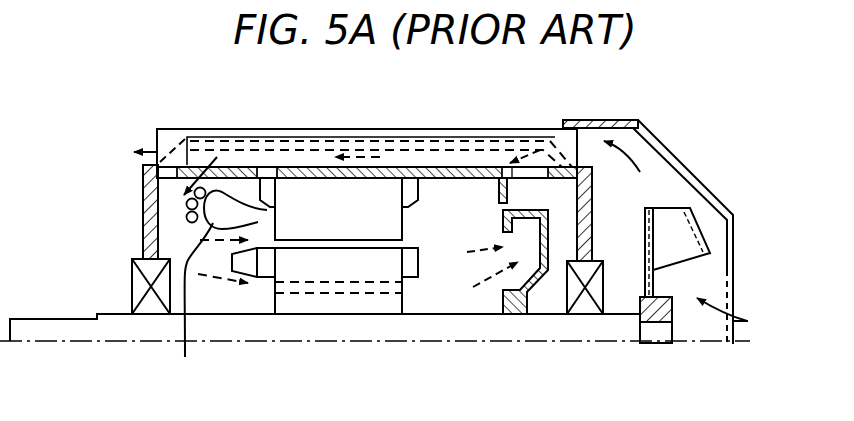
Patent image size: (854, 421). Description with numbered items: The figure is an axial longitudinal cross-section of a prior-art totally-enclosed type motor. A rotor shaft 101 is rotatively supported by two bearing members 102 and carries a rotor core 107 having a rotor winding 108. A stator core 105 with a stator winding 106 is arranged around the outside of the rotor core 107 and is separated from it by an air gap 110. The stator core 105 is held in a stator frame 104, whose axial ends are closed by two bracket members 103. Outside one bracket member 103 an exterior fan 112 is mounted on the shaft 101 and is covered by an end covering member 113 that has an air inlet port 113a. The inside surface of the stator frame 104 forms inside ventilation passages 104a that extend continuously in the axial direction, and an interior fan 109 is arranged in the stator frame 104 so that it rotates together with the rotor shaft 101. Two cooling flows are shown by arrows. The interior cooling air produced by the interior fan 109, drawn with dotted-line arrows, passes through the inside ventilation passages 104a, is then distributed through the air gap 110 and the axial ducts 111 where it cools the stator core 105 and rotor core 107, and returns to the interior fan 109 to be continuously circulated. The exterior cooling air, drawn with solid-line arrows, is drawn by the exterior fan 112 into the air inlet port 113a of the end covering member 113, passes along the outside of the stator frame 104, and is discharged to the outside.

The rotor shaft 101 is at (40, 318).
The bearing member 102 is at (152, 300).
The bracket member 103 is at (143, 211).
The stator frame 104 is at (166, 165).
The inside ventilation passage 104a is at (397, 155).
The stator core 105 is at (303, 178).
The stator winding 106 is at (217, 288).
The rotor core 107 is at (320, 302).
The rotor winding 108 is at (258, 276).
The interior fan 109 is at (525, 227).
The air gap 110 is at (340, 242).
The axial duct 111 is at (382, 287).
The exterior fan 112 is at (668, 208).
The end covering member 113 is at (733, 216).
The air inlet port 113a is at (733, 303).